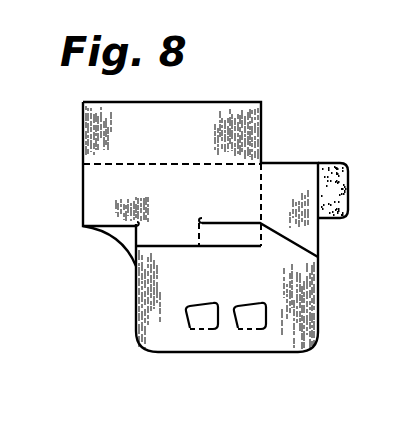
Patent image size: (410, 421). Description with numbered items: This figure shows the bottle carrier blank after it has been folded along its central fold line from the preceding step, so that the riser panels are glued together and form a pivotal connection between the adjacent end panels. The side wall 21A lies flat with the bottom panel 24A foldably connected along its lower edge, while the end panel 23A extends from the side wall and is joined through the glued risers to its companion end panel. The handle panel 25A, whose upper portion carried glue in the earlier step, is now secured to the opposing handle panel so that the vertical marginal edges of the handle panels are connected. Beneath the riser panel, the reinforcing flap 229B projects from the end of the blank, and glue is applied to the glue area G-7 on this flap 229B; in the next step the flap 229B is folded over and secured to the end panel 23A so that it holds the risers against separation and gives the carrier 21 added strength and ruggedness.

The blank 21 is at (246, 225).
The side wall 21A is at (105, 184).
The end panel 23A is at (272, 183).
The bottom panel 24A is at (252, 128).
The handle panel 25A is at (153, 287).
The reinforcing flap 229B is at (340, 168).
The glue area G-7 is at (339, 216).